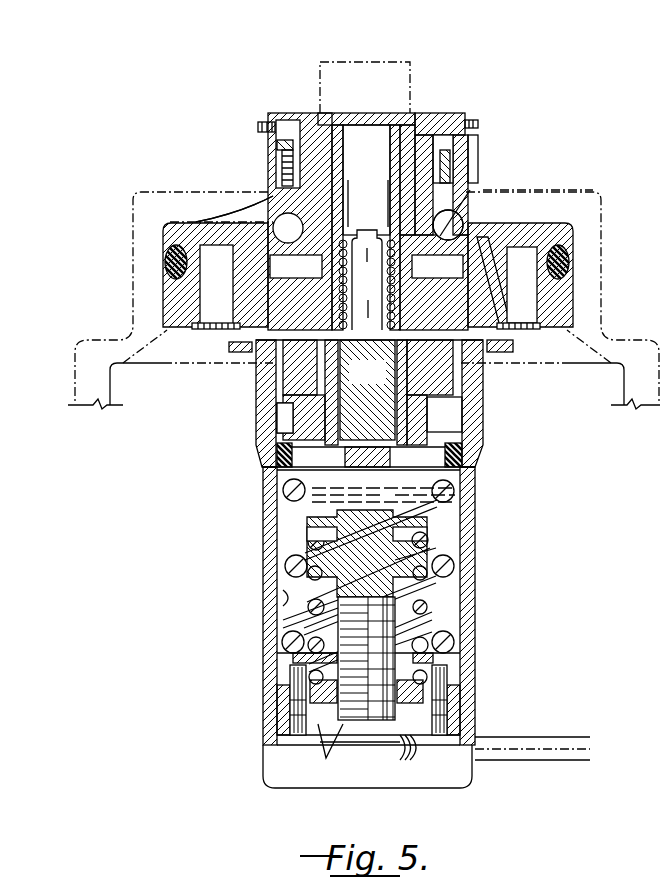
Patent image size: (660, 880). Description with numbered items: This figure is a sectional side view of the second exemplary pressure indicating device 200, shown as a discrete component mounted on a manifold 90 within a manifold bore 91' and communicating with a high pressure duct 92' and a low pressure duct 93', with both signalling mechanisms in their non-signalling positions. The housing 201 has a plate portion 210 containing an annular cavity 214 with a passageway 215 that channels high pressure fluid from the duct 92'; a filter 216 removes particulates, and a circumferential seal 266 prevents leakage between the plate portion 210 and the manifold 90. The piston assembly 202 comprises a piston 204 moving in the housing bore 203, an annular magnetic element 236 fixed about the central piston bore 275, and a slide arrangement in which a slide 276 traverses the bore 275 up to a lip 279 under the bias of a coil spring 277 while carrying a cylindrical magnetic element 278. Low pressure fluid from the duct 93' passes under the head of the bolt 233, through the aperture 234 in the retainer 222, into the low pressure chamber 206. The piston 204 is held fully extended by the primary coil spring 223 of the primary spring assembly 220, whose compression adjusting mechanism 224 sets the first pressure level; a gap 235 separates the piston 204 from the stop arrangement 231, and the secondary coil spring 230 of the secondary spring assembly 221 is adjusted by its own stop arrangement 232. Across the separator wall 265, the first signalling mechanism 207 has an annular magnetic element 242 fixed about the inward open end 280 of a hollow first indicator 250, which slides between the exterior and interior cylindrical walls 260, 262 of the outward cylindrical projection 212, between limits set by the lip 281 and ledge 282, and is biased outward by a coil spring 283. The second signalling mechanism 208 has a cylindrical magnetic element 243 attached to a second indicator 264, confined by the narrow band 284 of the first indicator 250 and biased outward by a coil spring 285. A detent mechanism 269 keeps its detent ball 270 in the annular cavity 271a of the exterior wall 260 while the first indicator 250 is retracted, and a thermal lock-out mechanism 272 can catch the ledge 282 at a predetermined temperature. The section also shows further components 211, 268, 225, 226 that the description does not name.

The second pressure indicating device 200 is at (552, 108).
The lip 281 is at (328, 113).
The narrow band 284 is at (412, 110).
The first signalling mechanism 207 is at (440, 112).
The thermal lock-out mechanism 272 is at (472, 155).
The outward cylindrical projection 212 is at (450, 172).
The detent ball 270 is at (482, 196).
The detent mechanism 269 is at (478, 214).
The plate portion 210 is at (572, 228).
The circumferential seal 266 is at (571, 262).
The filter 216 is at (520, 320).
The annular cavity 271a is at (262, 188).
The annular cavity 214 is at (208, 289).
The first indicator 250 is at (322, 148).
The exterior cylindrical wall 260 is at (273, 157).
The ledge 282 is at (287, 180).
The interior cylindrical wall 262 is at (338, 138).
The second signalling mechanism 208 is at (350, 183).
The second indicator 264 is at (353, 190).
The first magnetic element 242 is at (296, 266).
The inward open end 280 is at (437, 266).
The second magnetic element 243 is at (378, 294).
The lip 279 is at (238, 345).
The coil spring 283 is at (508, 345).
The separator wall 265 is at (216, 365).
The high pressure duct 92' is at (542, 383).
The housing 201 is at (254, 380).
The magnetic element 236 is at (262, 386).
The slide 276 is at (235, 214).
The piston 204 is at (262, 435).
The piston bore 275 is at (276, 455).
The cylindrical magnetic element 278 is at (356, 380).
The coil spring 285 is at (485, 365).
The passageway 215 is at (481, 395).
The right lower seal 211 is at (475, 455).
The lower housing wall 268 is at (478, 470).
The coil spring 277 is at (283, 490).
The gap 235 is at (310, 500).
The secondary spring assembly 221 is at (308, 542).
The piston assembly 202 is at (451, 508).
The stop arrangement 232 is at (427, 556).
The primary coil spring 223 is at (290, 568).
The housing bore 203 is at (283, 597).
The low pressure chamber 206 is at (440, 601).
The secondary coil spring 230 is at (445, 612).
The primary spring assembly 220 is at (281, 622).
The spring seat ledge 225 is at (450, 660).
The compression adjusting mechanism 224 is at (456, 671).
The retainer 222 is at (277, 697).
The retainer ring 226 is at (297, 731).
The manifold bore 91' is at (340, 766).
The aperture 234 is at (321, 751).
The stop arrangement 231 is at (364, 745).
The bolt 233 is at (392, 742).
The low pressure duct 93' is at (532, 737).
The manifold 90 is at (593, 508).